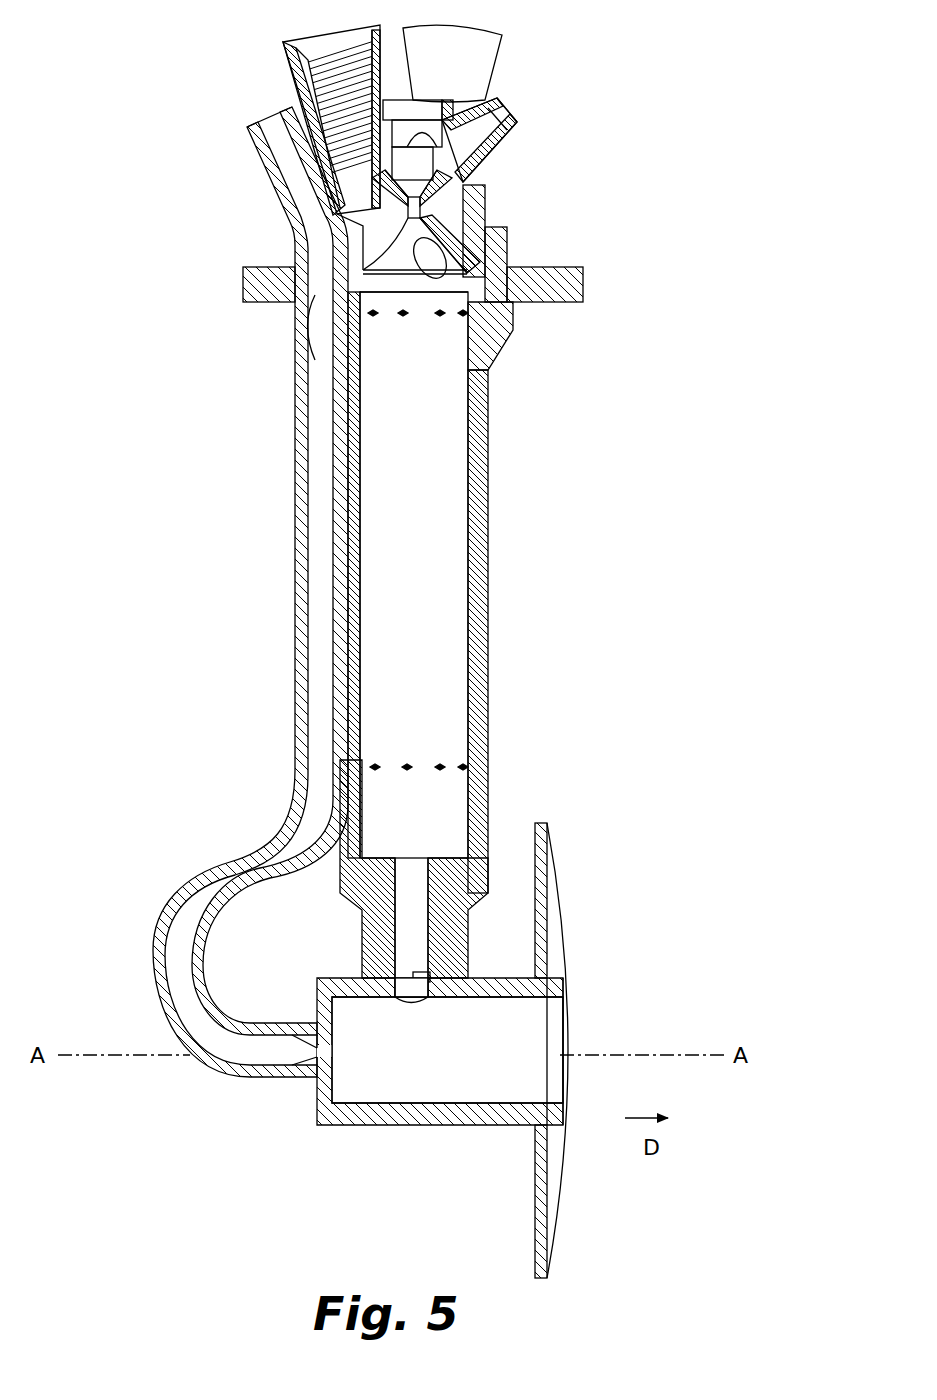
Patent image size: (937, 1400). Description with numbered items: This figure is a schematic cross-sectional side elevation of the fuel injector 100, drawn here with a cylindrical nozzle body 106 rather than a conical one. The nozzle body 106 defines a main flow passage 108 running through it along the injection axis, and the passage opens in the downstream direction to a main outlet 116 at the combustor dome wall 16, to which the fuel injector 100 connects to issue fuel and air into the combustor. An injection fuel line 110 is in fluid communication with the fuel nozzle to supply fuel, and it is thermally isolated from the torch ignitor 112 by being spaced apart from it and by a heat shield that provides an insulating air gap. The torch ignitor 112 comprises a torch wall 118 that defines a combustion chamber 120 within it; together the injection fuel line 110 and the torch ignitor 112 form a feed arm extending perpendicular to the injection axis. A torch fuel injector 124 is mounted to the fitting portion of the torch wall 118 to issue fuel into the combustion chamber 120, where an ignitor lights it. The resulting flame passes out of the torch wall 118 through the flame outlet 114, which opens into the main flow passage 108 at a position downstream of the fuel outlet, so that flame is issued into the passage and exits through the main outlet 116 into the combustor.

The fuel injector 100 is at (776, 406).
The torch fuel injector 124 is at (447, 207).
The injection fuel line 110 is at (323, 563).
The torch ignitor 112 is at (478, 596).
The torch wall 118 is at (493, 348).
The combustion chamber 120 is at (430, 602).
The flame outlet 114 is at (436, 984).
The nozzle body 106 is at (470, 1098).
The main flow passage 108 is at (468, 1062).
The main outlet 116 is at (588, 1023).
The combustor dome wall 16 is at (545, 1233).